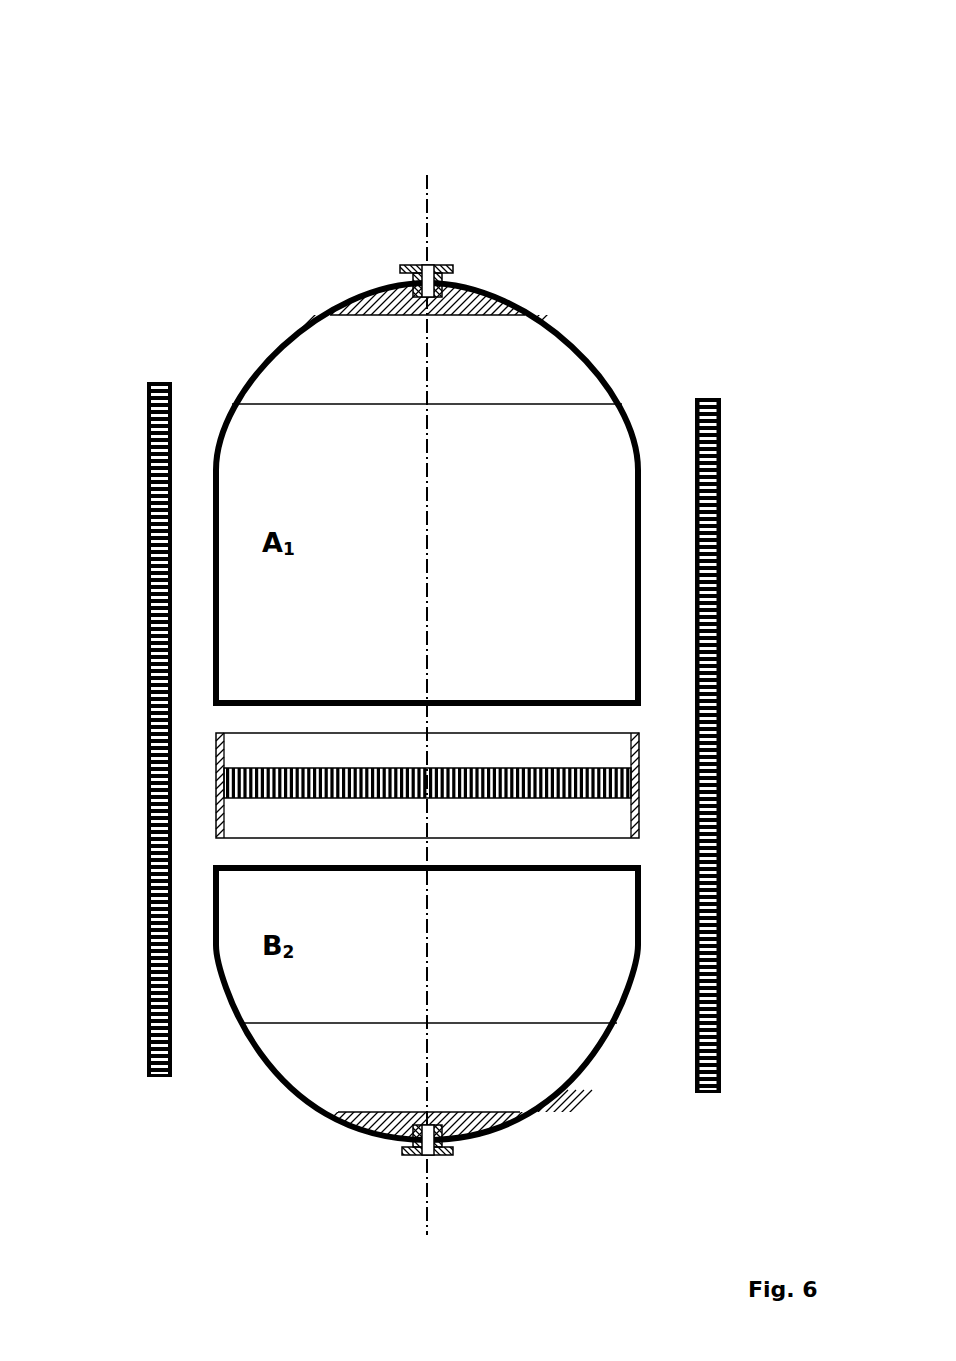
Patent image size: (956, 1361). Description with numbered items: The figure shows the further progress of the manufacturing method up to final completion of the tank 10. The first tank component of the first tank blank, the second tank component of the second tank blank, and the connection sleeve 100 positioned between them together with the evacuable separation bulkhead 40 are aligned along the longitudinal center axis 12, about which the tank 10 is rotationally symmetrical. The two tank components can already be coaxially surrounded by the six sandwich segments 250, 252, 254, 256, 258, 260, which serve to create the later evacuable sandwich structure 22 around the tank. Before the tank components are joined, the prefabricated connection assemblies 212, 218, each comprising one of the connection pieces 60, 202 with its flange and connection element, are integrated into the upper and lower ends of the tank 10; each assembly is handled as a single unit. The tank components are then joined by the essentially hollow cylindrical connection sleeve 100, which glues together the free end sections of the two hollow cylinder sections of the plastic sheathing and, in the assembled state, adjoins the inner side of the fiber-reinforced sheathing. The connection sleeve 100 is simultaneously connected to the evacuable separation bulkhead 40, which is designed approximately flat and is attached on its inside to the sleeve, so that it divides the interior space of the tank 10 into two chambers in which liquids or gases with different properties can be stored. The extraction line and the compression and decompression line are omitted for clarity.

The tank 10 is at (283, 214).
The longitudinal center axis 12 is at (428, 210).
The evacuable sandwich structure 22 is at (174, 772).
The evacuable separation bulkhead 40 is at (518, 770).
The connection piece 60 is at (405, 265).
The connection sleeve 100 is at (418, 780).
The connection piece 202 is at (412, 1156).
The connection assembly 212 is at (448, 372).
The connection assembly 218 is at (446, 1086).
The sandwich segment 250 is at (213, 817).
The sandwich segment 252 is at (213, 817).
The sandwich segment 254 is at (213, 817).
The sandwich segment 256 is at (647, 825).
The sandwich segment 258 is at (669, 825).
The sandwich segment 260 is at (709, 1104).